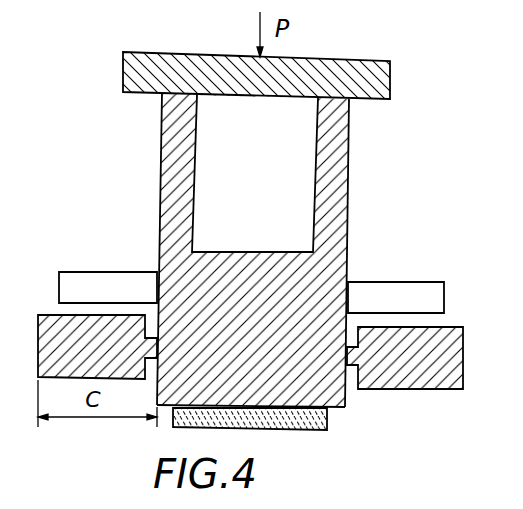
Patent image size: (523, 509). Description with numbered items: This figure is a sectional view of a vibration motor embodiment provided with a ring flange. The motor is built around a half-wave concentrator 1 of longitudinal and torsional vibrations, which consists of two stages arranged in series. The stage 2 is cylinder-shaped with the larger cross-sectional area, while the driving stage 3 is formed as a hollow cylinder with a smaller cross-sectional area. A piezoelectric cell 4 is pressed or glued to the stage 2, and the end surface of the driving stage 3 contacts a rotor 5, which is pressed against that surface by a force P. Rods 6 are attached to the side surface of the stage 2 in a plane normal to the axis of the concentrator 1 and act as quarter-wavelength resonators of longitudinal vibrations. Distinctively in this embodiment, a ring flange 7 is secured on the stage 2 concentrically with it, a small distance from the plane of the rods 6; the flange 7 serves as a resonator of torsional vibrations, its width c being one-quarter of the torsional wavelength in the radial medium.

The concentrator 1 is at (357, 239).
The stage 2 is at (340, 399).
The driving stage 3 is at (351, 161).
The piezoelectric cell 4 is at (327, 423).
The rotor 5 is at (341, 67).
The rods 6 is at (398, 290).
The ring flange 7 is at (442, 333).